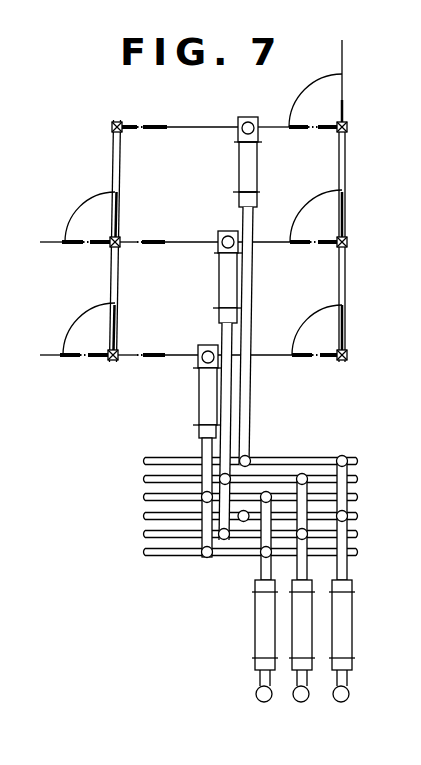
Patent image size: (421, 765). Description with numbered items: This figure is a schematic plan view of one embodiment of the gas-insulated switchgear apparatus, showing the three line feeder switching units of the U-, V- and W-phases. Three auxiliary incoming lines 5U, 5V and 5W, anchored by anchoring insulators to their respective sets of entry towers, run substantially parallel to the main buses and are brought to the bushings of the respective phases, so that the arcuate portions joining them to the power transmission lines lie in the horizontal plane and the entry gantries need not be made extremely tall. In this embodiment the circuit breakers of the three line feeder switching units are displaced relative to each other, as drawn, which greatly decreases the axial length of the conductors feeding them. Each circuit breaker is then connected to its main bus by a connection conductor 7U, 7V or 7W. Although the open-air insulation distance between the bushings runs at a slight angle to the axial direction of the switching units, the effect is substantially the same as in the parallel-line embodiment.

The auxiliary incoming line 5U is at (187, 126).
The auxiliary incoming line 5V is at (179, 241).
The auxiliary incoming line 5W is at (179, 355).
The connection conductor 7U is at (252, 385).
The connection conductor 7V is at (231, 415).
The connection conductor 7W is at (213, 447).